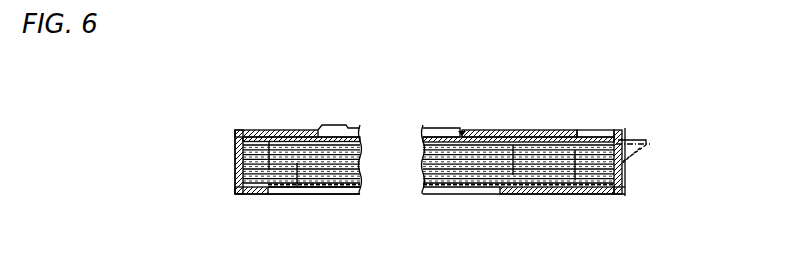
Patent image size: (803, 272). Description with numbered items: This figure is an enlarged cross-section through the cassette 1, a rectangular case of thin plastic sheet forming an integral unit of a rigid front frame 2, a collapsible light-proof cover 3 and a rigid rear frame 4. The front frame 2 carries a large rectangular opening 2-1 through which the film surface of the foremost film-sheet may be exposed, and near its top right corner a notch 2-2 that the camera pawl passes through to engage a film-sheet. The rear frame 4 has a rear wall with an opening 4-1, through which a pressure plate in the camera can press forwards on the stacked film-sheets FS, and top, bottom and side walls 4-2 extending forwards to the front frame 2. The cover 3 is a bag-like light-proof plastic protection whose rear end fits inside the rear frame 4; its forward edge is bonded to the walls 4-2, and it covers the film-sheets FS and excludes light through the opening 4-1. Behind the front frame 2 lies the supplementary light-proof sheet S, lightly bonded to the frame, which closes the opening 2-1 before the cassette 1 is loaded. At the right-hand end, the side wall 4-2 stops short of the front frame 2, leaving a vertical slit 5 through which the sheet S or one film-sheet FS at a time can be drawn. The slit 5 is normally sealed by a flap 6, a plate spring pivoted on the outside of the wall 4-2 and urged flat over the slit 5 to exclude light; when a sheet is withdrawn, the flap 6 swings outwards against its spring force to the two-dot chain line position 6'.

The cassette 1 is at (235, 167).
The supplementary light-proof sheet S is at (285, 136).
The film-sheets FS is at (297, 187).
The opening 4-1 is at (340, 194).
The rectangular opening 2-1 is at (463, 131).
The front frame 2 is at (487, 130).
The notch 2-2 is at (595, 130).
The slit 5 is at (619, 130).
The collapsible light-proof cover 3 is at (465, 183).
The rear frame 4 is at (558, 195).
The top, bottom and side walls 4-2 is at (627, 196).
The flap 6 is at (648, 129).
The flap in outward position 6' is at (654, 157).